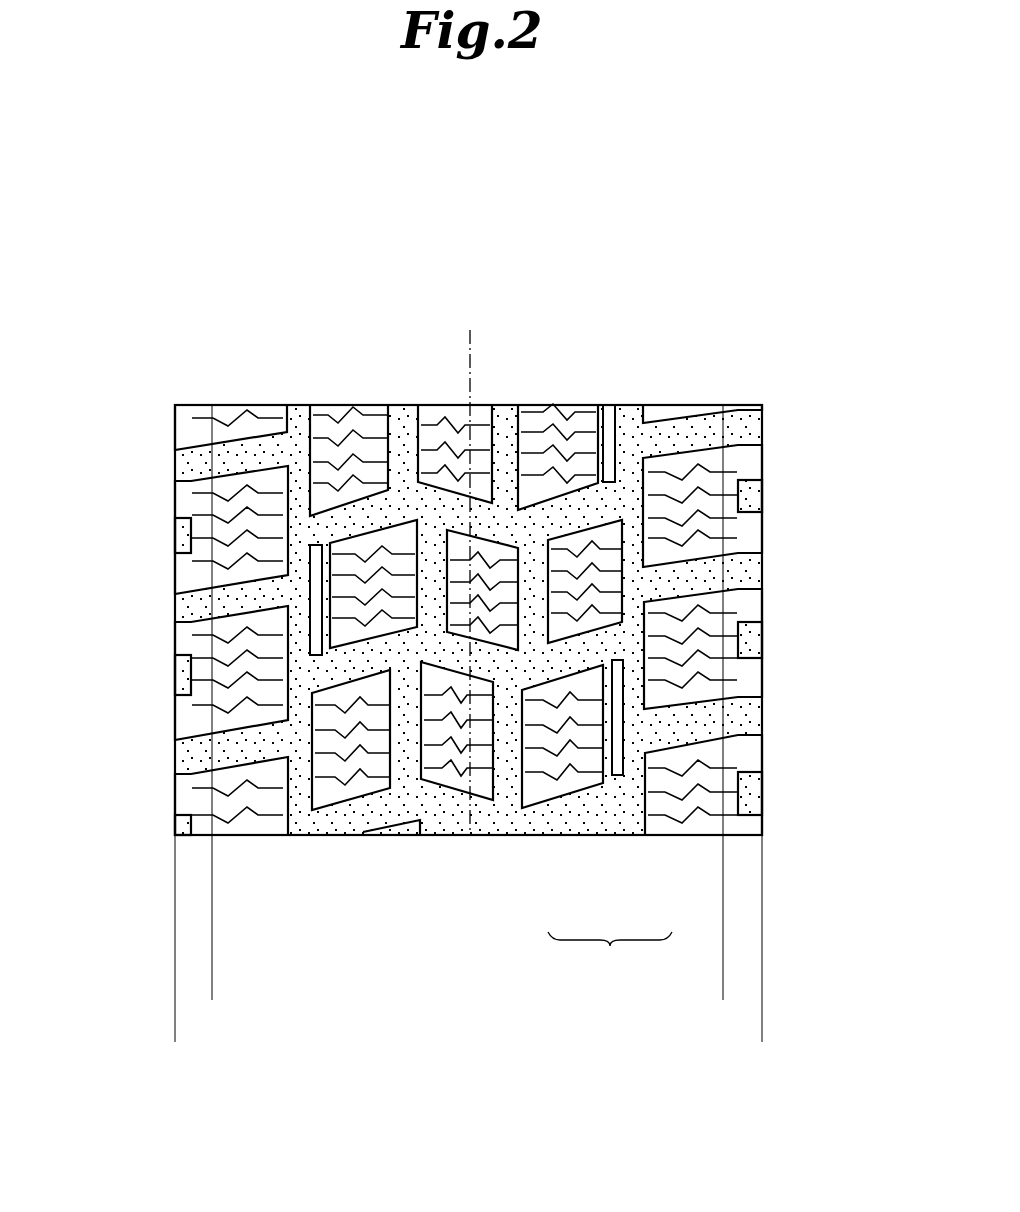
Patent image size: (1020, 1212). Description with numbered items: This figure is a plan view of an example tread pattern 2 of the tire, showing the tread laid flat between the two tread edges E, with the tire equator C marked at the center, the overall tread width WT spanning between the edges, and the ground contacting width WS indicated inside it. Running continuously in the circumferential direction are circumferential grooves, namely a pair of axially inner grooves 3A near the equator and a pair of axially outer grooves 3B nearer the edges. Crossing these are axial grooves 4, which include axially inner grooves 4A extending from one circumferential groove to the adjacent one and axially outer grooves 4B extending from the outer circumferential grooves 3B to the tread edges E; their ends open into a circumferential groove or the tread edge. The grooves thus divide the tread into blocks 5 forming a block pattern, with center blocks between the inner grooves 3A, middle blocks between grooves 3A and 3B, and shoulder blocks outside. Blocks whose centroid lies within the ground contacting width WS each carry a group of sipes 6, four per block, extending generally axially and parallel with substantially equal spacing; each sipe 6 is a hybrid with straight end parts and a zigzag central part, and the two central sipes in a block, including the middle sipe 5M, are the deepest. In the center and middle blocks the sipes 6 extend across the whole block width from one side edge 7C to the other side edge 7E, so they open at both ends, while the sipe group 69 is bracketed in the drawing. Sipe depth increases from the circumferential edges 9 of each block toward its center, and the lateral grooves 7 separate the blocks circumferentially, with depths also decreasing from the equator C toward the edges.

The tread pattern 2 is at (703, 380).
The axially inner circumferential grooves 3A is at (423, 403).
The axially outer circumferential grooves 3B is at (296, 403).
The axial grooves 4 is at (461, 670).
The axially inner axial grooves 4A is at (353, 668).
The axially outer axial grooves 4B is at (192, 466).
The blocks 5 is at (220, 403).
The middle sipe 5M is at (480, 403).
The sipes 6 is at (333, 403).
The block edge group 69 is at (610, 952).
The lateral grooves 7 is at (420, 727).
The one side edge 7C is at (398, 470).
The other side edge 7E is at (395, 468).
The circumferential edges 9 is at (567, 527).
The tire equator C is at (472, 840).
The tread edges E is at (178, 712).
The ground contacting width WS is at (723, 985).
The tread width WT is at (762, 1022).